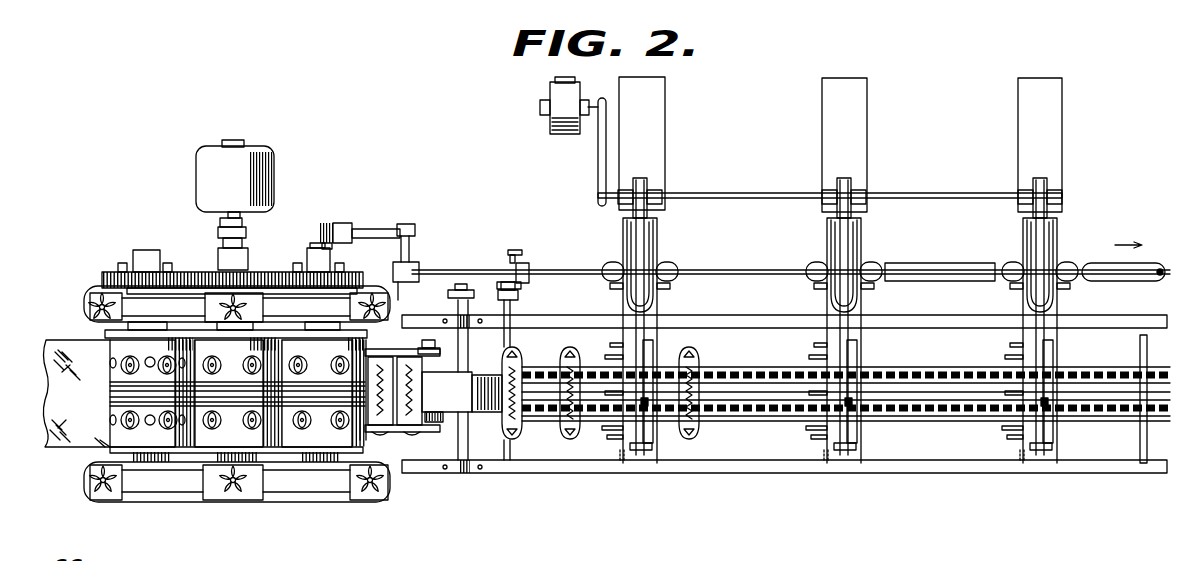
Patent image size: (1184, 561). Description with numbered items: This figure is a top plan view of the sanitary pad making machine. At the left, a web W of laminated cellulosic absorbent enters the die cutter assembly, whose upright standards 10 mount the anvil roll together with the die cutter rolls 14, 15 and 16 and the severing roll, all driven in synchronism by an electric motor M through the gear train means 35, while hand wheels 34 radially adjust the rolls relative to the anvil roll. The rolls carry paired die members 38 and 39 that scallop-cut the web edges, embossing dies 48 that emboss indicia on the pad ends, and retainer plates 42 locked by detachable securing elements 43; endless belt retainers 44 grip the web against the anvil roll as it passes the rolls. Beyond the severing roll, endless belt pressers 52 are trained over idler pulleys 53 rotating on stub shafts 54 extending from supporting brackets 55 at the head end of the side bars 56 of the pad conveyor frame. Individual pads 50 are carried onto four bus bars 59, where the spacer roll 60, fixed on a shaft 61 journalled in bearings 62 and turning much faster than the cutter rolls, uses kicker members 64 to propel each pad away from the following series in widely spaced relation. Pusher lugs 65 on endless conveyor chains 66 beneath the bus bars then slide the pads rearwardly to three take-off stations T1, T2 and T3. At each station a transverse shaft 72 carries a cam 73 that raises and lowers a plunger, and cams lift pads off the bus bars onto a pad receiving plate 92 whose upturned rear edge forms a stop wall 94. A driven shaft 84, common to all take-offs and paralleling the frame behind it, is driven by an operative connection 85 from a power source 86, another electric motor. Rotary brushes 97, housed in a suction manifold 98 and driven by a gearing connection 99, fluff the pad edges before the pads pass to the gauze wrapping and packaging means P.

The power source M is at (282, 155).
The gear train means 35 is at (193, 271).
The hand wheels 34 is at (257, 285).
The die cutter roll 15 is at (258, 336).
The die cutter roll 16 is at (318, 334).
The web W is at (54, 340).
The die cutter roll 14 is at (116, 345).
The die member 38 is at (110, 362).
The embossing dies 48 is at (153, 355).
The die member 39 is at (174, 361).
The retainer plate 42 is at (308, 364).
The detachable securing elements 43 is at (306, 416).
The endless belt retainers 44 is at (110, 400).
The upright standards 10 is at (286, 476).
The supporting brackets 55 is at (430, 327).
The stub shafts 54 is at (419, 343).
The side bars 56 is at (527, 326).
The bearings 62 is at (466, 320).
The shaft 61 is at (458, 432).
The spacer roll 60 is at (447, 392).
The kicker members 64 is at (486, 374).
The endless belt pressers 52 is at (400, 390).
The idler pulleys 53 is at (409, 391).
The pads 50 is at (408, 436).
The bus bars 59 is at (745, 375).
The endless conveyor chains 66 is at (962, 373).
The pusher lugs 65 is at (678, 364).
The shaft 72 is at (524, 474).
The cam 73 is at (622, 450).
The take-off station T1 is at (668, 318).
The take-off station T2 is at (874, 325).
The take-off station T3 is at (1068, 327).
The pad receiving plate 92 is at (612, 344).
The stop wall 94 is at (658, 312).
The suction manifold 98 is at (942, 262).
The rotary brushes 97 is at (606, 262).
The gearing connection 99 is at (612, 285).
The gauze wrapping and packaging means P is at (664, 112).
The driven shaft 84 is at (738, 196).
The operative connection 85 is at (597, 150).
The power source 86 is at (556, 112).